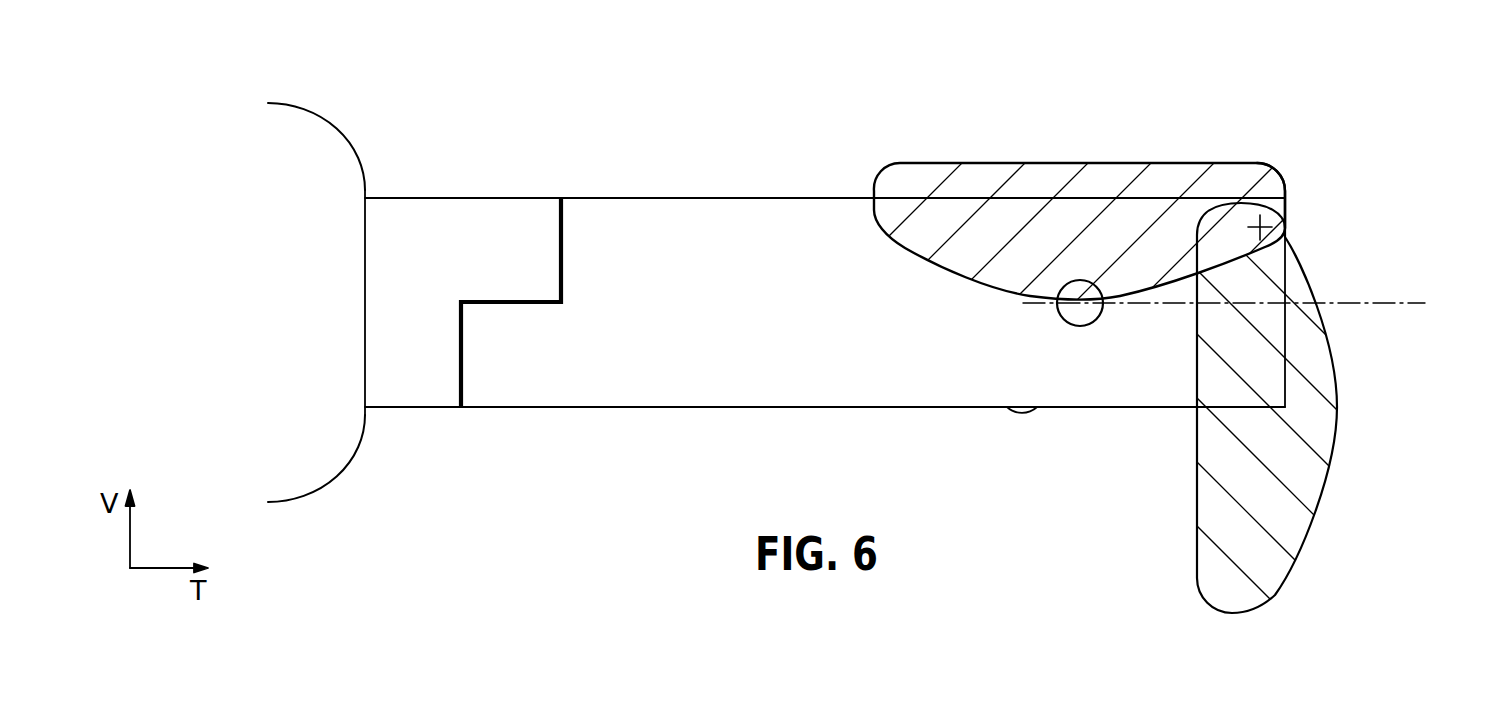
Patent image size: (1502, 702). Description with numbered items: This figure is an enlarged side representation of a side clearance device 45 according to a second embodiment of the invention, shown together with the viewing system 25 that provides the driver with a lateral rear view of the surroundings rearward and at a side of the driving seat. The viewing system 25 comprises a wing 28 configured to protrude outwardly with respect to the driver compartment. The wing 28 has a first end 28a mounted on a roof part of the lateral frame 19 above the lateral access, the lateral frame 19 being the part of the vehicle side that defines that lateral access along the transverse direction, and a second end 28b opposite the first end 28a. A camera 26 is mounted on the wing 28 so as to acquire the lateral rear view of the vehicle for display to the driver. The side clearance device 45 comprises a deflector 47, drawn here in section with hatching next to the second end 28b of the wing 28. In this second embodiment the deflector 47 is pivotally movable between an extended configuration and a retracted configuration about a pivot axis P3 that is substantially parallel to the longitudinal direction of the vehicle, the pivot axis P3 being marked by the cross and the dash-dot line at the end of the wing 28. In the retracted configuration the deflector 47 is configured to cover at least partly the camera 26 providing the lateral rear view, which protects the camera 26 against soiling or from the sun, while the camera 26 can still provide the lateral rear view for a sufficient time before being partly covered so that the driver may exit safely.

The lateral frame 19 is at (320, 107).
The viewing system 25 is at (1146, 96).
The camera 26 is at (1081, 326).
The wing 28 is at (778, 194).
The first end 28a is at (563, 194).
The second end 28b is at (1291, 181).
The side clearance device 45 is at (1406, 199).
The deflector 47 is at (1336, 380).
The pivot axis P3 is at (1258, 220).